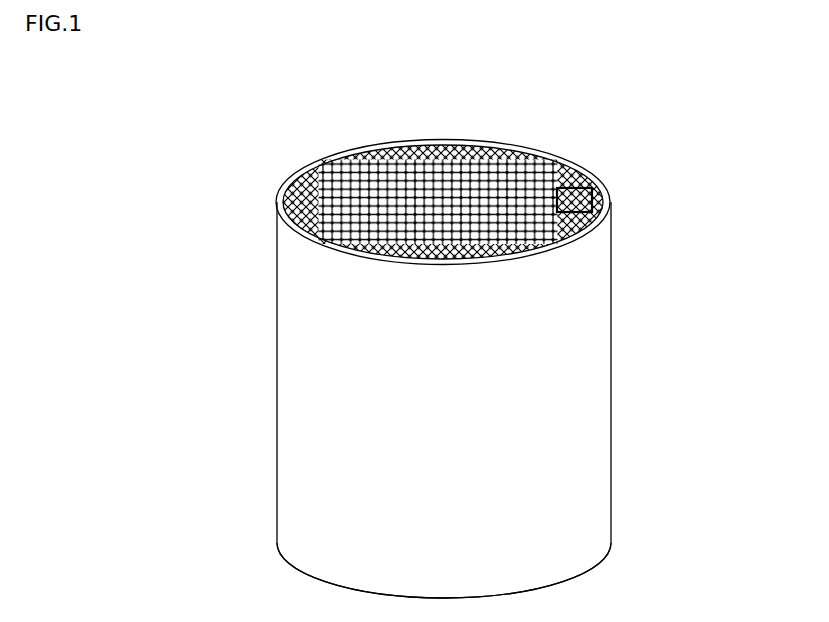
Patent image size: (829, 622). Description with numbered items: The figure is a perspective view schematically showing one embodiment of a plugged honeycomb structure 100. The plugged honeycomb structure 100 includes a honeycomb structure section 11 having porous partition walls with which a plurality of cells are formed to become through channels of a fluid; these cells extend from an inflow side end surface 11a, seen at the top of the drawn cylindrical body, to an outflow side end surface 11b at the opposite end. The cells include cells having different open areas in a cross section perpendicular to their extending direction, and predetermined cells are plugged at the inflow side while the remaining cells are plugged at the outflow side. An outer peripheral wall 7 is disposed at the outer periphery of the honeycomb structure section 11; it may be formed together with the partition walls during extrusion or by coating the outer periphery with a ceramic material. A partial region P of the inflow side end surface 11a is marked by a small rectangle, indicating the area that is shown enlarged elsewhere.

The plugged honeycomb structure 100 is at (493, 344).
The outer peripheral wall 7 is at (558, 393).
The honeycomb structure section 11 is at (497, 170).
The inflow side end surface 11a is at (463, 140).
The outflow side end surface 11b is at (470, 598).
The partial region P is at (603, 190).